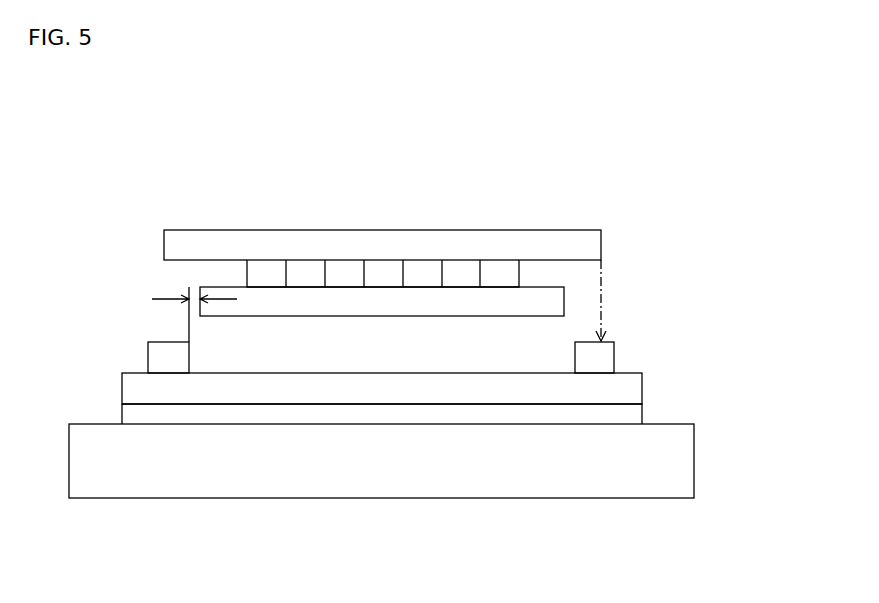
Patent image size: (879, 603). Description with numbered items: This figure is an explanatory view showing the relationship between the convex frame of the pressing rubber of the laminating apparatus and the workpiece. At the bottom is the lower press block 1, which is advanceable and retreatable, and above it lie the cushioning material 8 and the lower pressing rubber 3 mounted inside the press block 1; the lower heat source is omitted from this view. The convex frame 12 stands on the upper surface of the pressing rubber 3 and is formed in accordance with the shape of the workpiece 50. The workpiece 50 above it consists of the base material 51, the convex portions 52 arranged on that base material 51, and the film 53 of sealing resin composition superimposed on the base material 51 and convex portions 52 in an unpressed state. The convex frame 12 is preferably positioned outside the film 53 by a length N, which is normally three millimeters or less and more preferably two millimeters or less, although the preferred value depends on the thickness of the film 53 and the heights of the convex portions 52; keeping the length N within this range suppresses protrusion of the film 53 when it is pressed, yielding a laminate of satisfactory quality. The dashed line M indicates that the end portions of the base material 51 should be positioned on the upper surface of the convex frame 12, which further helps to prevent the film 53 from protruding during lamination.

The lower press block 1 is at (680, 460).
The lower pressing rubber 3 is at (340, 382).
The cushioning material 8 is at (632, 413).
The convex frame 12 is at (608, 357).
The workpiece 50 is at (426, 269).
The base material 51 is at (504, 243).
The convex portions 52 is at (428, 268).
The film 53 is at (466, 307).
The length N is at (189, 290).
The dashed line M is at (601, 322).